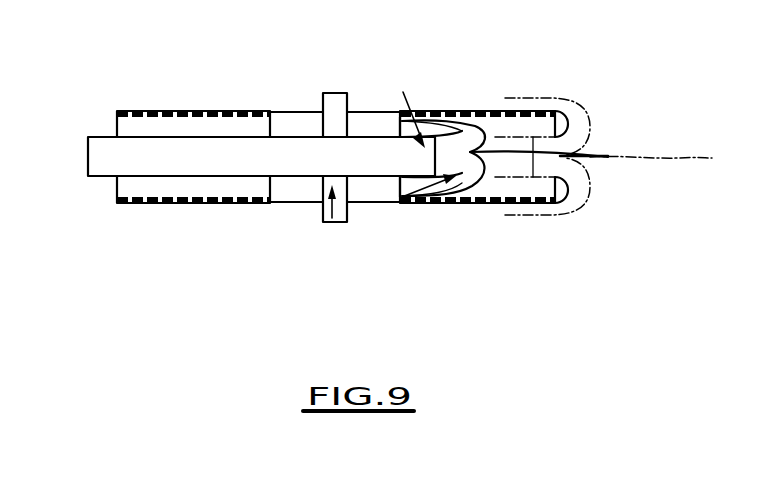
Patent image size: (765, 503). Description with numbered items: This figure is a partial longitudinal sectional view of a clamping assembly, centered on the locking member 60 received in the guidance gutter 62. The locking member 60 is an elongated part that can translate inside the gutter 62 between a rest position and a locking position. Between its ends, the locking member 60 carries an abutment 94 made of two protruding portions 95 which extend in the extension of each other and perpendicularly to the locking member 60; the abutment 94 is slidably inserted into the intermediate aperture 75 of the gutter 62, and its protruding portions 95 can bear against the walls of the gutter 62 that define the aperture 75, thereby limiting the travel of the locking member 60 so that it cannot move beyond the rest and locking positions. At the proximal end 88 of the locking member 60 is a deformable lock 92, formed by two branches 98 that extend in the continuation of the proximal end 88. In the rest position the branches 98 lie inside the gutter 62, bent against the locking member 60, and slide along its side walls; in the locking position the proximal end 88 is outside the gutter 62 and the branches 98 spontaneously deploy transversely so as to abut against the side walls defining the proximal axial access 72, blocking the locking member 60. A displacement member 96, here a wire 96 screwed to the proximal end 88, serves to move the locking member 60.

The locking member 60 is at (105, 162).
The guidance gutter 62 is at (150, 203).
The intermediate aperture 75 is at (297, 185).
The abutment 94 is at (333, 235).
The protruding portions 95 is at (325, 220).
The proximal end 88 is at (423, 125).
The branches 98 is at (460, 111).
The lock 92 is at (560, 150).
The displacement member 96 is at (648, 158).
The proximal axial access 72 is at (530, 191).